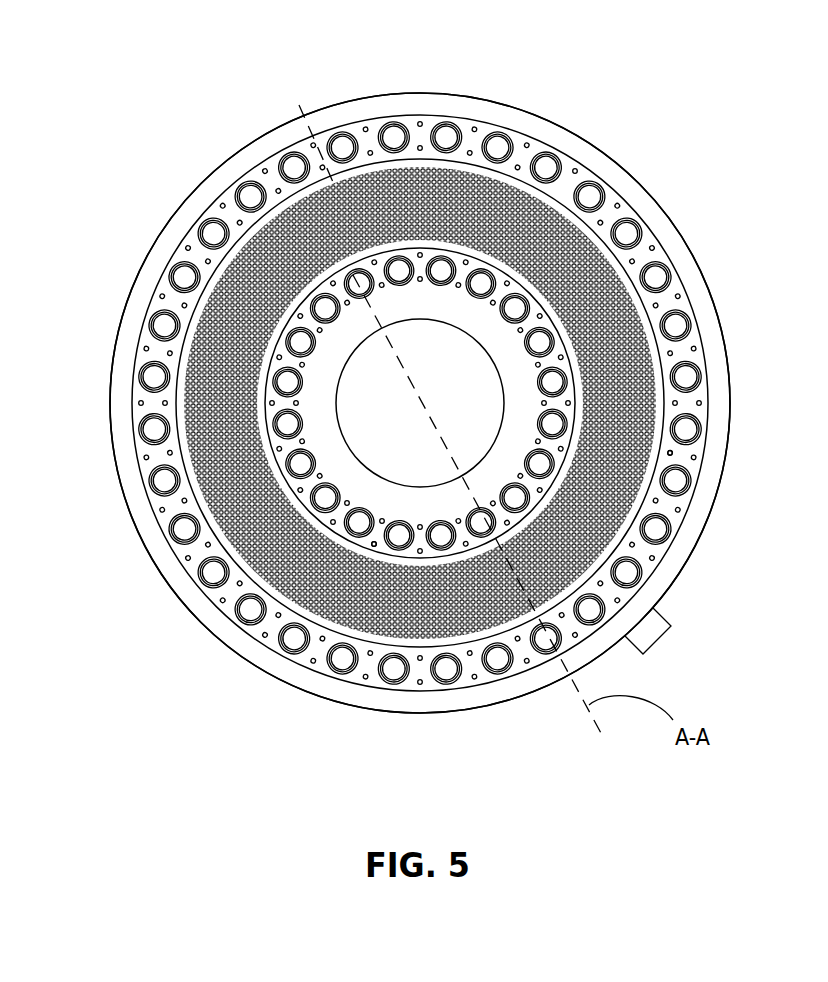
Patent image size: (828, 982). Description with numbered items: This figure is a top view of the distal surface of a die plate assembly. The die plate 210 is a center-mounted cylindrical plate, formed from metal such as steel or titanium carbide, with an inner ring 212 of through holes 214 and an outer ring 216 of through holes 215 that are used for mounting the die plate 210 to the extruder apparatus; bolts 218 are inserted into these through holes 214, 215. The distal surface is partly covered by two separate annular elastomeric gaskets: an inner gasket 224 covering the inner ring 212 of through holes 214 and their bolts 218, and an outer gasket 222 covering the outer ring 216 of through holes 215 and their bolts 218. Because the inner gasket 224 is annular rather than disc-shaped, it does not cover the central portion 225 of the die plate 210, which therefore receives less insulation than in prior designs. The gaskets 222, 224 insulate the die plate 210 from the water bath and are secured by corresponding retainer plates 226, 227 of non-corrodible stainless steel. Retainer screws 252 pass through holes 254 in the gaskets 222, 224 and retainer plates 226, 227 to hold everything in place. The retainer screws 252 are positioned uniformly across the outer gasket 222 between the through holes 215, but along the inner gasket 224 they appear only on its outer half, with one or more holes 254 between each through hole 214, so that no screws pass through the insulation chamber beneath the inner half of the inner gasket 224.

The die plate 210 is at (223, 101).
The inner ring 212 is at (530, 393).
The through holes 214 is at (302, 425).
The through holes 215 is at (493, 132).
The outer ring 216 is at (407, 112).
The bolts 218 is at (545, 166).
The outer gasket 222 is at (663, 248).
The inner gasket 224 is at (267, 340).
The central portion 225 is at (467, 366).
The retainer plate 226 is at (324, 497).
The retainer plate 227 is at (578, 172).
The retainer screws 252 is at (673, 454).
The holes 254 is at (701, 402).